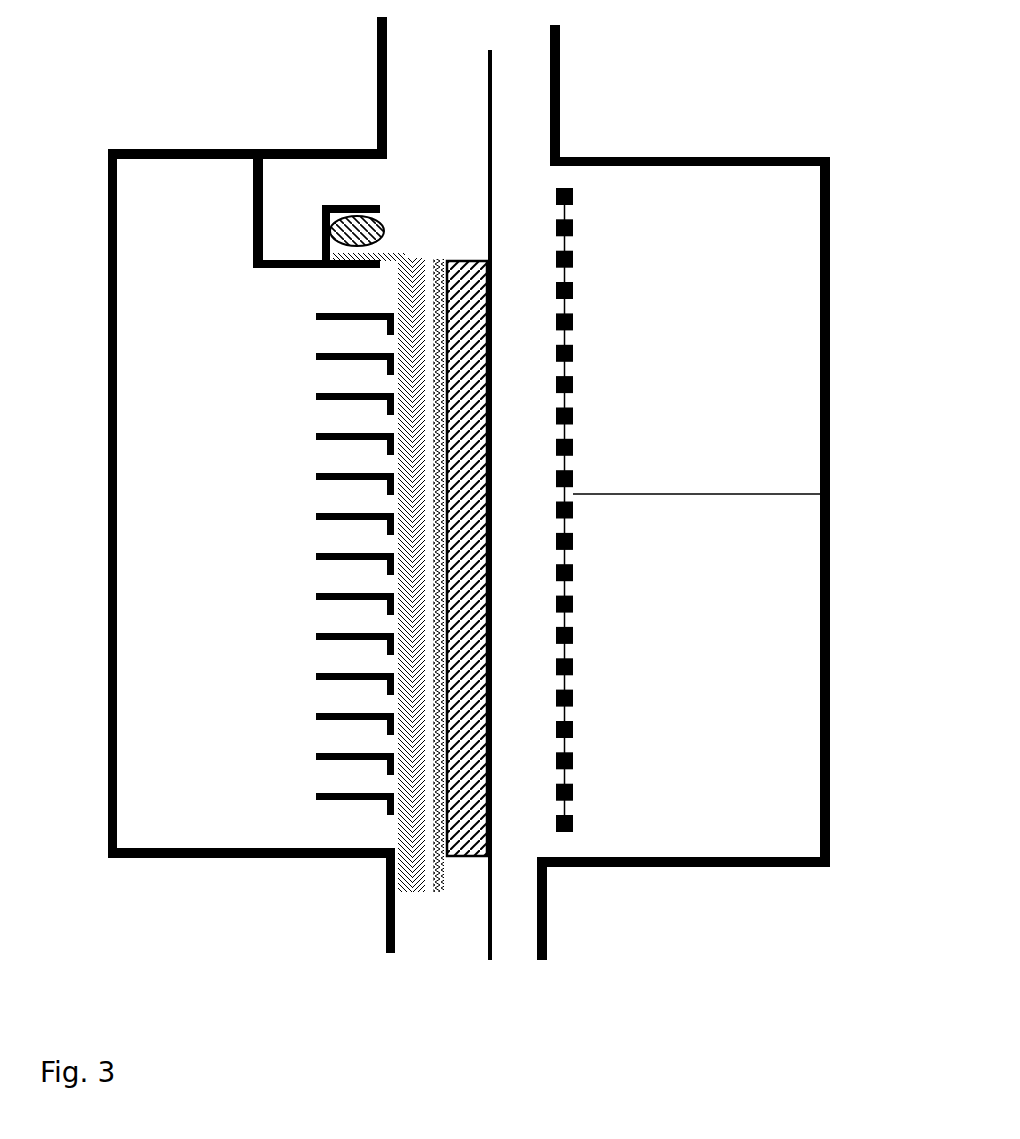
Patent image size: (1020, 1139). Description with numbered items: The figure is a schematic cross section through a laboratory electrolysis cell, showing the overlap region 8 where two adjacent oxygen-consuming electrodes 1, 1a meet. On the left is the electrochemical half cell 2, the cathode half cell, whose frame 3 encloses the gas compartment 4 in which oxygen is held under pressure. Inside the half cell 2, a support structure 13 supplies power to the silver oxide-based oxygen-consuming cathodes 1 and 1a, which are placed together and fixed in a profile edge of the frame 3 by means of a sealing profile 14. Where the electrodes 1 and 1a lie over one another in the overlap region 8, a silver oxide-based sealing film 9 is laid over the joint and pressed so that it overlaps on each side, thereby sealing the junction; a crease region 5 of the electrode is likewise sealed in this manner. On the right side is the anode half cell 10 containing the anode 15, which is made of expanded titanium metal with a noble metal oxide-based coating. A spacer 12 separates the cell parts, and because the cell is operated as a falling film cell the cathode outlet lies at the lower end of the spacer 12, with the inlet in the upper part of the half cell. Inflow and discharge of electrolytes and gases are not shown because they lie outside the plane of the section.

The oxygen-consuming electrode 1 is at (398, 578).
The oxygen-consuming electrode 1a is at (415, 618).
The electrochemical half cell 2 is at (266, 124).
The frame 3 is at (297, 268).
The gas compartment 4 is at (174, 657).
The crease region 5 is at (397, 263).
The overlap region 8 is at (412, 300).
The sealing film 9 is at (437, 298).
The anode half cell 10 is at (843, 270).
The spacer 12 is at (455, 840).
The support structure 13 is at (327, 508).
The sealing profile 14 is at (323, 207).
The anode 15 is at (572, 583).